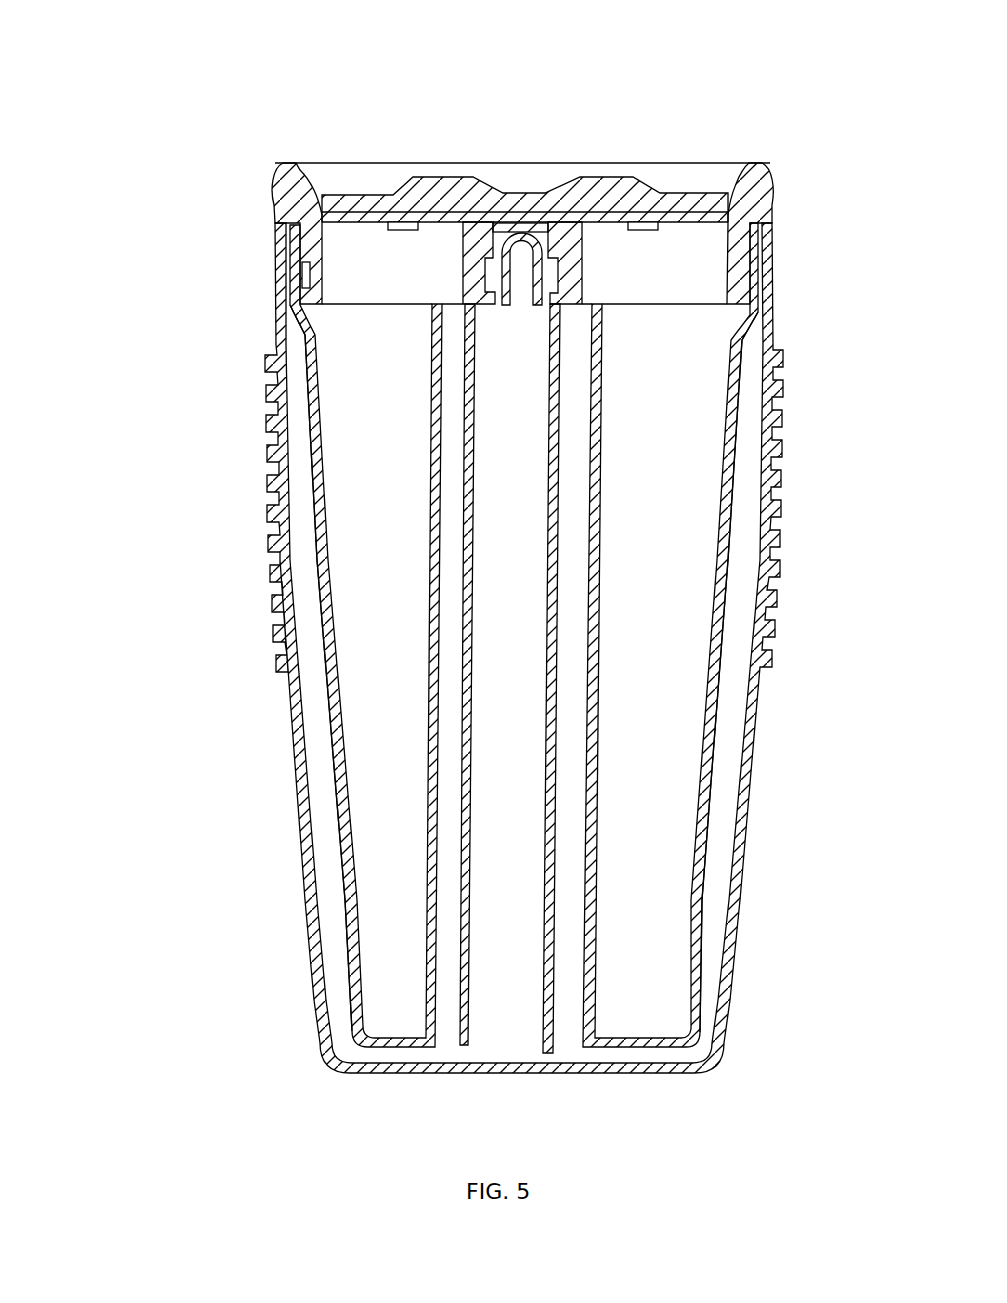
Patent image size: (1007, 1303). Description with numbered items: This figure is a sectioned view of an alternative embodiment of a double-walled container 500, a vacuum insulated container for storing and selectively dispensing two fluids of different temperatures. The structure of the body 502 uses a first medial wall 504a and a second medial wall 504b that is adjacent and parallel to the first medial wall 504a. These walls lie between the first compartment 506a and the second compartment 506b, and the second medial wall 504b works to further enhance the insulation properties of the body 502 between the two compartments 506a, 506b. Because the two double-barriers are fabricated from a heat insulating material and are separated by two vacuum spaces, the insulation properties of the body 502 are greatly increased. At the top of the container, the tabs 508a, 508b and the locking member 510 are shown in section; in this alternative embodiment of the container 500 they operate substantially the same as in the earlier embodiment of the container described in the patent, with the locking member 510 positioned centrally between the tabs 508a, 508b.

The double-walled container 500 is at (133, 95).
The body 502 is at (258, 720).
The first medial wall 504a is at (425, 436).
The second medial wall 504b is at (605, 436).
The first compartment 506a is at (320, 547).
The second compartment 506b is at (722, 538).
The tab 508a is at (438, 183).
The tab 508b is at (600, 184).
The locking member 510 is at (528, 212).